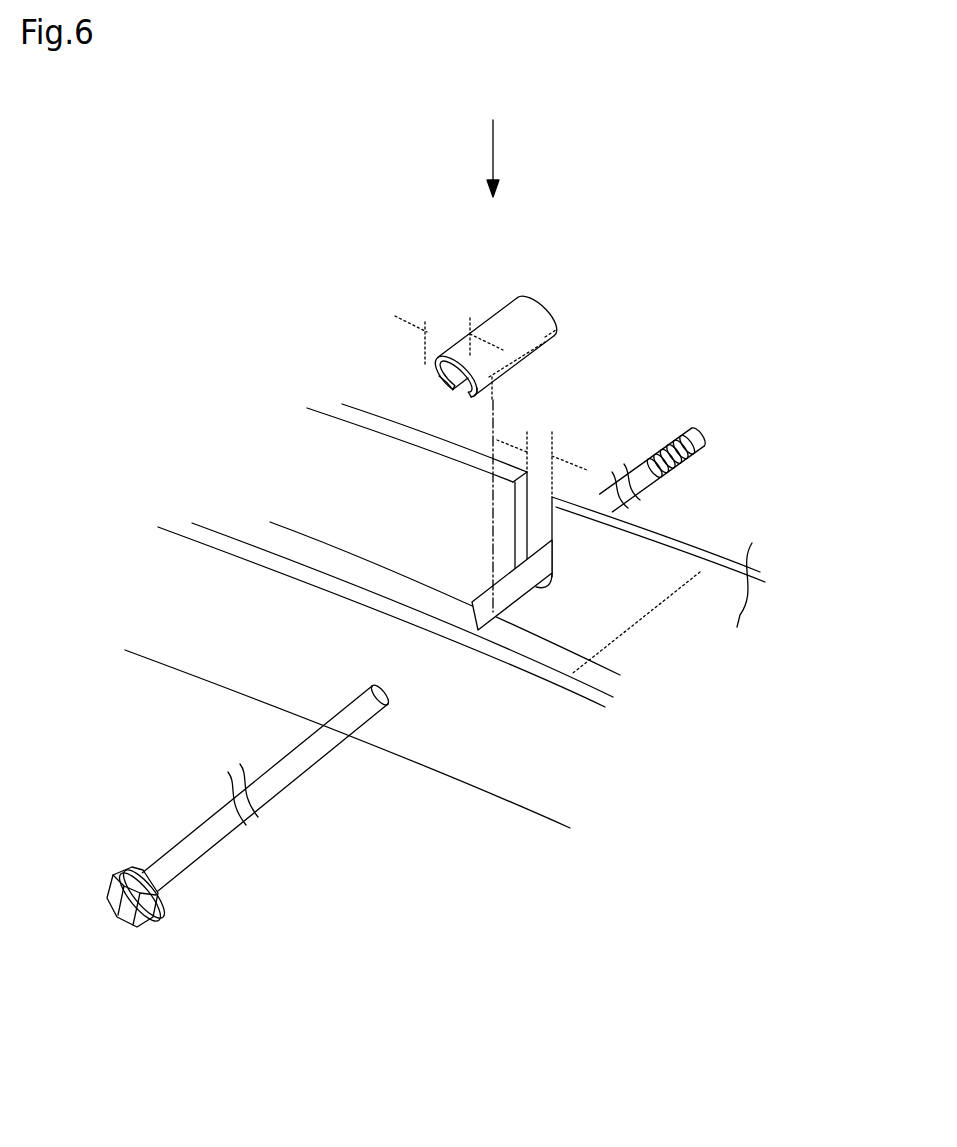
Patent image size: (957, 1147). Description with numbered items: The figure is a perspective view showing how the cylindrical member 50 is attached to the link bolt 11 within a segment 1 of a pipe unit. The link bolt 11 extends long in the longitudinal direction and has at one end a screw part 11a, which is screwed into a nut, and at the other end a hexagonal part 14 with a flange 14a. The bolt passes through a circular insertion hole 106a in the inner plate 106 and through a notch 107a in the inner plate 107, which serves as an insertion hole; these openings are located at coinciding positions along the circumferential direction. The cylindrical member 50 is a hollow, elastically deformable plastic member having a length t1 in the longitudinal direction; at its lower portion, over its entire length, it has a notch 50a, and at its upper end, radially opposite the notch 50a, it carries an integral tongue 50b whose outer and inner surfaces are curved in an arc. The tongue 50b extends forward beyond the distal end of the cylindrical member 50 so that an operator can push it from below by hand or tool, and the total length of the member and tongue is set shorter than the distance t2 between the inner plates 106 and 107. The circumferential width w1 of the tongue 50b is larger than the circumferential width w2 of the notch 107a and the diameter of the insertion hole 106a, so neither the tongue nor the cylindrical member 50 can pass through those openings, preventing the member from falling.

The segment 1 is at (219, 366).
The cylindrical member 50 is at (505, 304).
The notch 50a is at (462, 389).
The tongue 50b is at (495, 383).
The circumferential width w1 is at (449, 340).
The length t1 is at (522, 361).
The circumferential width w2 is at (542, 463).
The distance t2 is at (636, 622).
The link bolt 11 is at (290, 784).
The screw part 11a is at (688, 464).
The hexagonal part 14 is at (130, 927).
The flange 14a is at (167, 903).
The inner plate 106 is at (538, 780).
The insertion hole 106a is at (388, 710).
The inner plate 107 is at (550, 515).
The notch 107a is at (548, 502).